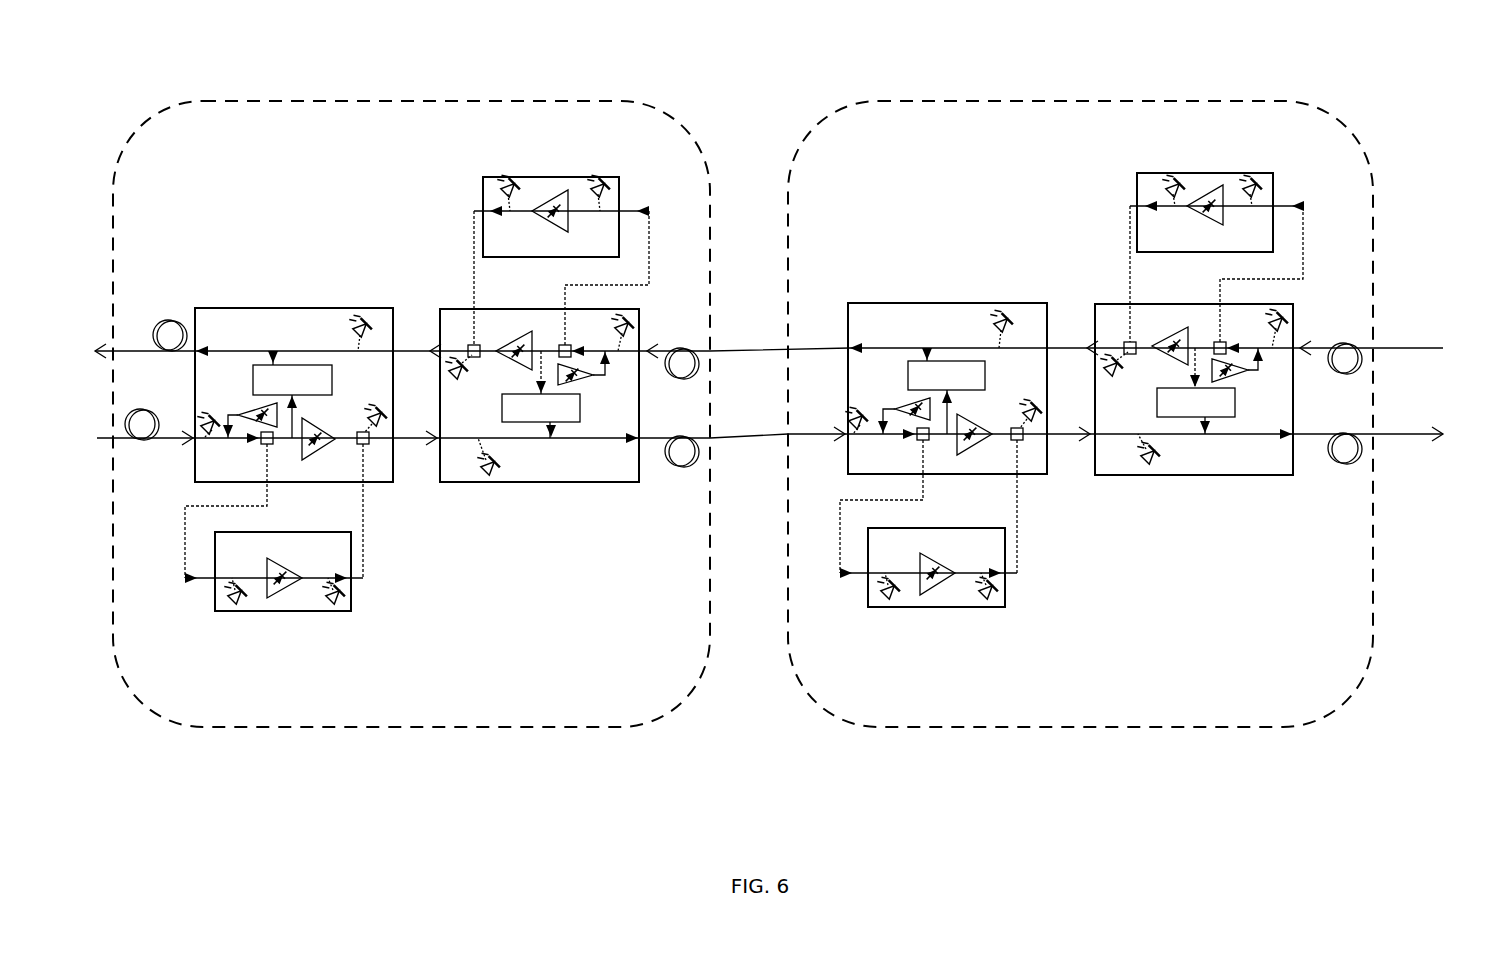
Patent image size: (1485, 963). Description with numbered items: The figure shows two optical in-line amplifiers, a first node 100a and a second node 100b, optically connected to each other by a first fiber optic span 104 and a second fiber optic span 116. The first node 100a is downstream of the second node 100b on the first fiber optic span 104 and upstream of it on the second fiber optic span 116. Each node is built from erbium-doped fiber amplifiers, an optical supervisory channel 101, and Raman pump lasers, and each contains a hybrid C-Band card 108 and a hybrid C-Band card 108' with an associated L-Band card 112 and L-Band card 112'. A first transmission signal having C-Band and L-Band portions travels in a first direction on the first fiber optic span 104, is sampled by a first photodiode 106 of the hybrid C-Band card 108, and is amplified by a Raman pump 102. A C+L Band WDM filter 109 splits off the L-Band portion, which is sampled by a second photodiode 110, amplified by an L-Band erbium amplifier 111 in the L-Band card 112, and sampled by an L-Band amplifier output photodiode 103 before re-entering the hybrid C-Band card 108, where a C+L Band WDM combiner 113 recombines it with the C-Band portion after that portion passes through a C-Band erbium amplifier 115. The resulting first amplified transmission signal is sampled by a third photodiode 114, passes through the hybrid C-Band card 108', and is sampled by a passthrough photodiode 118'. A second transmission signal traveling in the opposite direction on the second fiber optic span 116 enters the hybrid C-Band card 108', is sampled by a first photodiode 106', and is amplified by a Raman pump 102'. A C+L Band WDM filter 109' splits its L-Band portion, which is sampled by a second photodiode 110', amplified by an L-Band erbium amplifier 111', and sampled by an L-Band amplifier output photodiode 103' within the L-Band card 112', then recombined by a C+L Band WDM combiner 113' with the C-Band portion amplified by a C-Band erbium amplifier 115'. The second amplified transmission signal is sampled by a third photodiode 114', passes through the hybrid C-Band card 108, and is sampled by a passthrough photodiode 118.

The first node 100a is at (600, 98).
The second node 100b is at (1255, 98).
The optical supervisory channel 101 is at (744, 393).
The Raman pump 102 is at (968, 405).
The Raman pump 102' is at (520, 380).
The L-Band amplifier output photodiode 103 is at (829, 166).
The L-Band amplifier output photodiode 103' is at (662, 621).
The first fiber optic span 104 is at (745, 350).
The first photodiode 106 is at (952, 342).
The first photodiode 106' is at (535, 411).
The hybrid C-Band card 108 is at (866, 417).
The hybrid C-Band card 108' is at (616, 371).
The C+L Band WDM filter 109 is at (880, 314).
The C+L Band WDM filter 109' is at (607, 479).
The second photodiode 110 is at (958, 169).
The second photodiode 110' is at (547, 621).
The L-Band erbium amplifier 111 is at (887, 173).
The L-Band erbium amplifier 111' is at (607, 611).
The L-Band card 112 is at (847, 255).
The L-Band card 112' is at (629, 545).
The C+L Band WDM combiner 113 is at (780, 311).
The C+L Band WDM combiner 113' is at (719, 477).
The third photodiode 114 is at (788, 384).
The third photodiode 114' is at (693, 393).
The C-Band erbium amplifier 115 is at (835, 321).
The C-Band erbium amplifier 115' is at (658, 470).
The second fiber optic span 116 is at (748, 455).
The passthrough photodiode 118 is at (819, 487).
The passthrough photodiode 118' is at (694, 301).